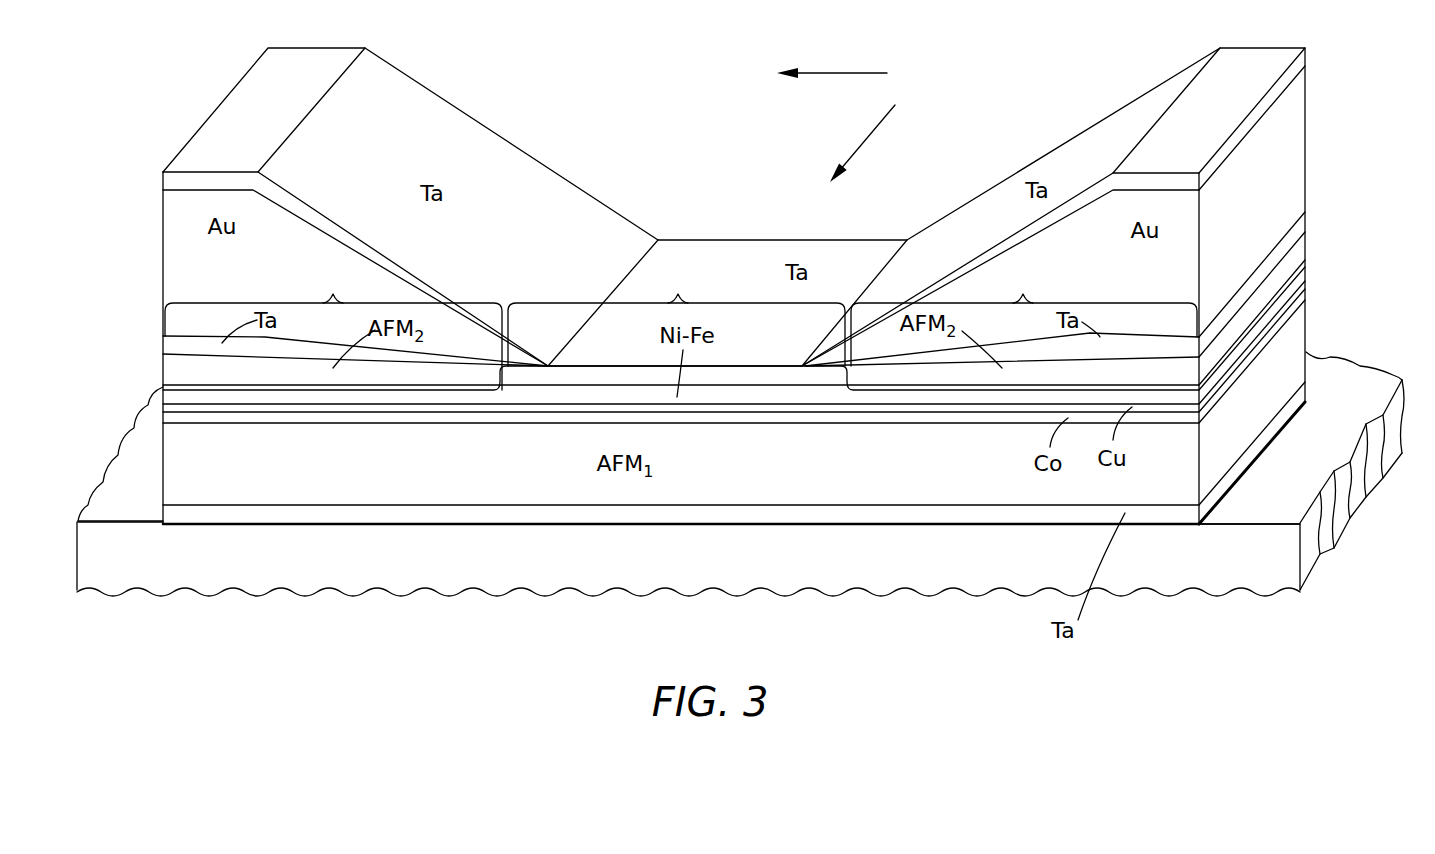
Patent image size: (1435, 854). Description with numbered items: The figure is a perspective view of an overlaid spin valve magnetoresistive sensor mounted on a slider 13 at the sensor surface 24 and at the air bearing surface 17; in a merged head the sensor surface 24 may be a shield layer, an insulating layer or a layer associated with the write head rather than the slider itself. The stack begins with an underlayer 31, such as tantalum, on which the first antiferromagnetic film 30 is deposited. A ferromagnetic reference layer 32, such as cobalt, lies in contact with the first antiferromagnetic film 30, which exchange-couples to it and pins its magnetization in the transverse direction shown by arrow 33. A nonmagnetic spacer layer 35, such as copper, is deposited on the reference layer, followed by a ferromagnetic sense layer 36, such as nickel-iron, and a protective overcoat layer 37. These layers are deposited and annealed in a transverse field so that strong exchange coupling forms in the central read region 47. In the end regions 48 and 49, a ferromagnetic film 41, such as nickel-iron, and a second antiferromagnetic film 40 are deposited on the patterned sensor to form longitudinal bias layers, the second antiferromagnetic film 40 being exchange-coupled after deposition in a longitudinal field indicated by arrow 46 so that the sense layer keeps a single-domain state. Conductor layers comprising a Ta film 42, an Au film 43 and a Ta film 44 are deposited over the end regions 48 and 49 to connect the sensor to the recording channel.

The slider 13 is at (1390, 372).
The air bearing surface 17 is at (862, 568).
The sensor surface 24 is at (1345, 372).
The first antiferromagnetic film 30 is at (482, 492).
The underlayer 31 is at (570, 515).
The ferromagnetic reference layer 32 is at (740, 410).
The arrow 33 is at (868, 137).
The nonmagnetic spacer layer 35 is at (790, 400).
The ferromagnetic sense layer 36 is at (832, 393).
The protective overcoat layer 37 is at (691, 238).
The second antiferromagnetic film 40 is at (163, 385).
The ferromagnetic film 41 is at (305, 388).
The Ta film 42 is at (163, 340).
The Au film 43 is at (163, 221).
The Ta film 44 is at (163, 174).
The arrow 46 is at (835, 73).
The read region 47 is at (676, 312).
The end region 48 is at (333, 283).
The end region 49 is at (1023, 284).